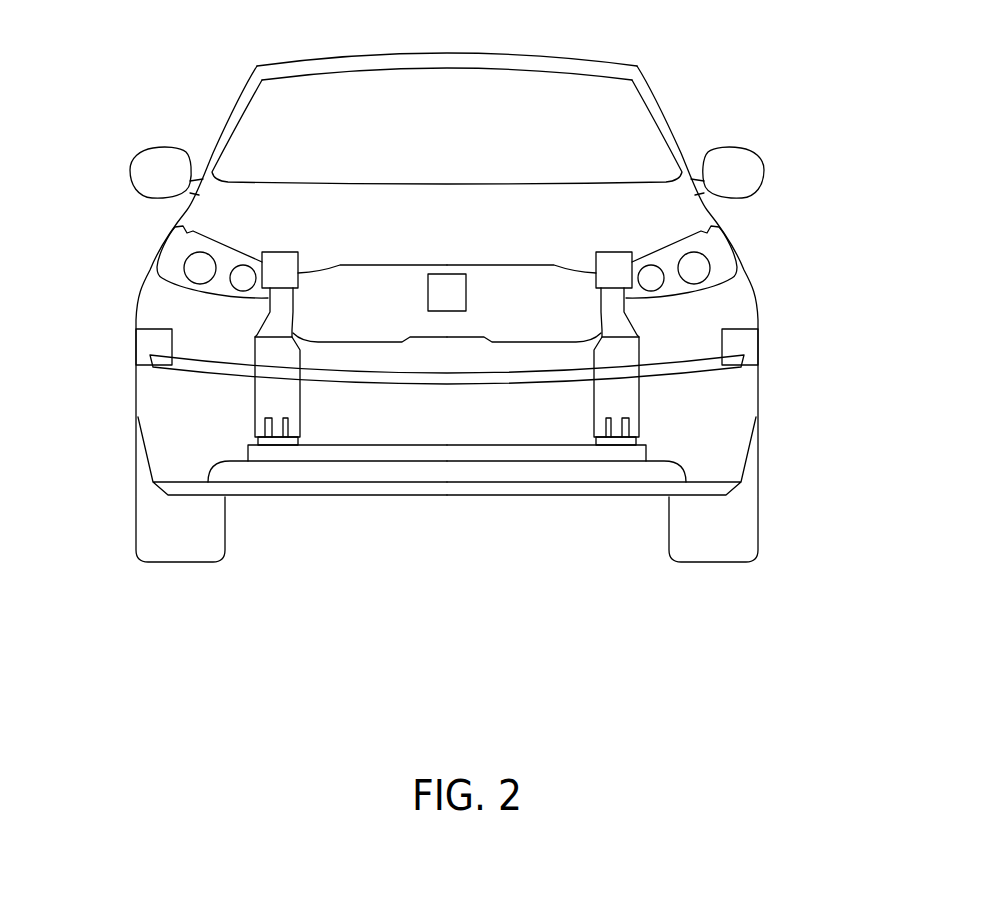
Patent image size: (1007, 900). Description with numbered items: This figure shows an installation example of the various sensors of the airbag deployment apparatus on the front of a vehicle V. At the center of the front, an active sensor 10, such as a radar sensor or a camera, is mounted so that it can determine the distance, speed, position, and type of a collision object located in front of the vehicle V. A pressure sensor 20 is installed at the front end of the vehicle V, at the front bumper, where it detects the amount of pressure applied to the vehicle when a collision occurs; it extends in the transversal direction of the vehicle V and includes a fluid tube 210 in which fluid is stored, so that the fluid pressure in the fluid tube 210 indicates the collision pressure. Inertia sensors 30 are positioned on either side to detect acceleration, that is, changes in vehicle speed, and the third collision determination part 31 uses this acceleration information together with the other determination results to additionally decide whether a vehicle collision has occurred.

The vehicle V is at (631, 66).
The active sensor 10 is at (458, 307).
The pressure sensor 20 is at (143, 345).
The inertia sensor 30 is at (268, 268).
The third collision determination part 31 is at (282, 403).
The fluid tube 210 is at (428, 377).